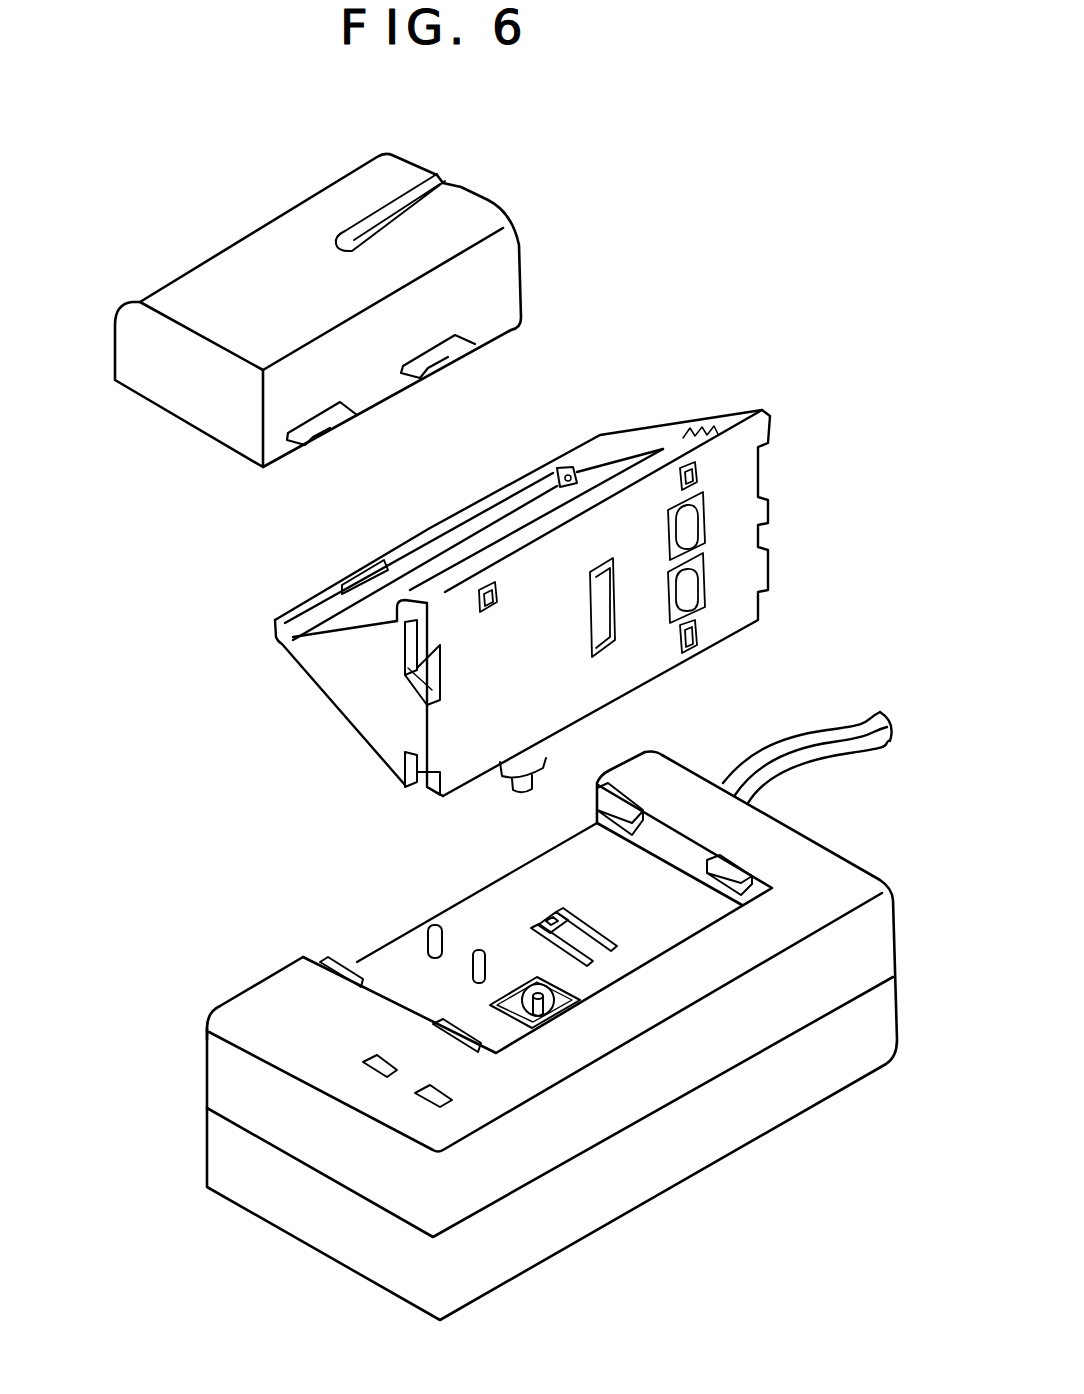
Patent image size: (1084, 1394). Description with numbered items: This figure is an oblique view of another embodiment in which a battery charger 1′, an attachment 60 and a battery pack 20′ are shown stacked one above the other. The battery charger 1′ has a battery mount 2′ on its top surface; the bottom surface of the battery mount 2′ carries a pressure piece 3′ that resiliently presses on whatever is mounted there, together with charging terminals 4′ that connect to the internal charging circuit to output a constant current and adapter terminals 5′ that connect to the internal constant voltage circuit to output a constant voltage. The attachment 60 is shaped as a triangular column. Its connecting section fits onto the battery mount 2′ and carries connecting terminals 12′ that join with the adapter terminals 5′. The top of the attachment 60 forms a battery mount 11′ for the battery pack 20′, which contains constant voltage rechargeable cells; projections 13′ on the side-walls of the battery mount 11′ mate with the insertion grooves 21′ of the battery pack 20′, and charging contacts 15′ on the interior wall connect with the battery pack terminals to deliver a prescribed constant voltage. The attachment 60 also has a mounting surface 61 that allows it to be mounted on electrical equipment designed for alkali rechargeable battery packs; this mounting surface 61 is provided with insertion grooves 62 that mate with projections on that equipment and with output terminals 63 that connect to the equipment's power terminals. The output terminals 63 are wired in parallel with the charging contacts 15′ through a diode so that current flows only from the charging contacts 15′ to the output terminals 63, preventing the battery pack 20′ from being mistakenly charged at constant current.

The battery charger 1′ is at (552, 1016).
The battery mount 2′ is at (377, 968).
The pressure piece 3′ is at (540, 917).
The charging terminals 4′ is at (477, 950).
The adapter terminals 5′ is at (520, 987).
The battery mount 11′ is at (345, 627).
The connecting terminals 12′ is at (527, 762).
The projections 13′ is at (401, 497).
The charging contacts 15′ is at (567, 465).
The battery pack 20′ is at (359, 310).
The insertion grooves 21′ is at (338, 427).
The attachment 60 is at (552, 574).
The mounting surface 61 is at (618, 603).
The insertion grooves 62 is at (412, 680).
The output terminals 63 is at (692, 527).